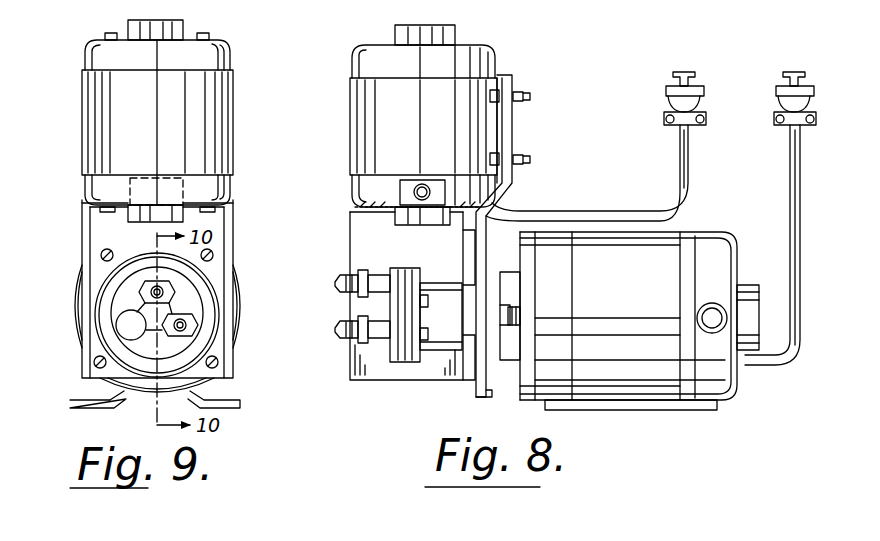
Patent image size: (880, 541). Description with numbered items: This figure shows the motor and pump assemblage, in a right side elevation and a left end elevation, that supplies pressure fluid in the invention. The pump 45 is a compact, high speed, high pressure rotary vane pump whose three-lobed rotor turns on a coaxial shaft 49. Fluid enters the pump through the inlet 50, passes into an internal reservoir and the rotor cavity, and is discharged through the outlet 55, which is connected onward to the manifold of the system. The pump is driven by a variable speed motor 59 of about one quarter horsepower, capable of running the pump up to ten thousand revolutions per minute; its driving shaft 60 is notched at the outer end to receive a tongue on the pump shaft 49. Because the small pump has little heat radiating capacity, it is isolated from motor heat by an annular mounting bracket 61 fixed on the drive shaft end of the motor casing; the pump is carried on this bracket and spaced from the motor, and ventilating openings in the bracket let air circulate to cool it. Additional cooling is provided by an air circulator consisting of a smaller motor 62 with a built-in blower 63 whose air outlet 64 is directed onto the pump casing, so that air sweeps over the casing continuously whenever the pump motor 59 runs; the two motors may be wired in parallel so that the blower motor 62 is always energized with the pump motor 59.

In FIG. 9, the pump 45 is at (108, 285).
In FIG. 8, the pump 45 is at (405, 368).
In FIG. 8, the shaft 49 is at (505, 312).
In FIG. 8, the inlet 50 is at (355, 282).
In FIG. 8, the outlet 55 is at (355, 328).
In FIG. 9, the motor 59 is at (76, 333).
In FIG. 8, the motor 59 is at (708, 252).
In FIG. 8, the driving shaft 60 is at (505, 325).
In FIG. 8, the mounting bracket 61 is at (525, 255).
In FIG. 9, the motor 62 is at (95, 45).
In FIG. 8, the motor 62 is at (490, 62).
In FIG. 9, the blower 63 is at (130, 190).
In FIG. 8, the blower 63 is at (400, 193).
In FIG. 9, the air outlet 64 is at (143, 224).
In FIG. 8, the air outlet 64 is at (410, 226).